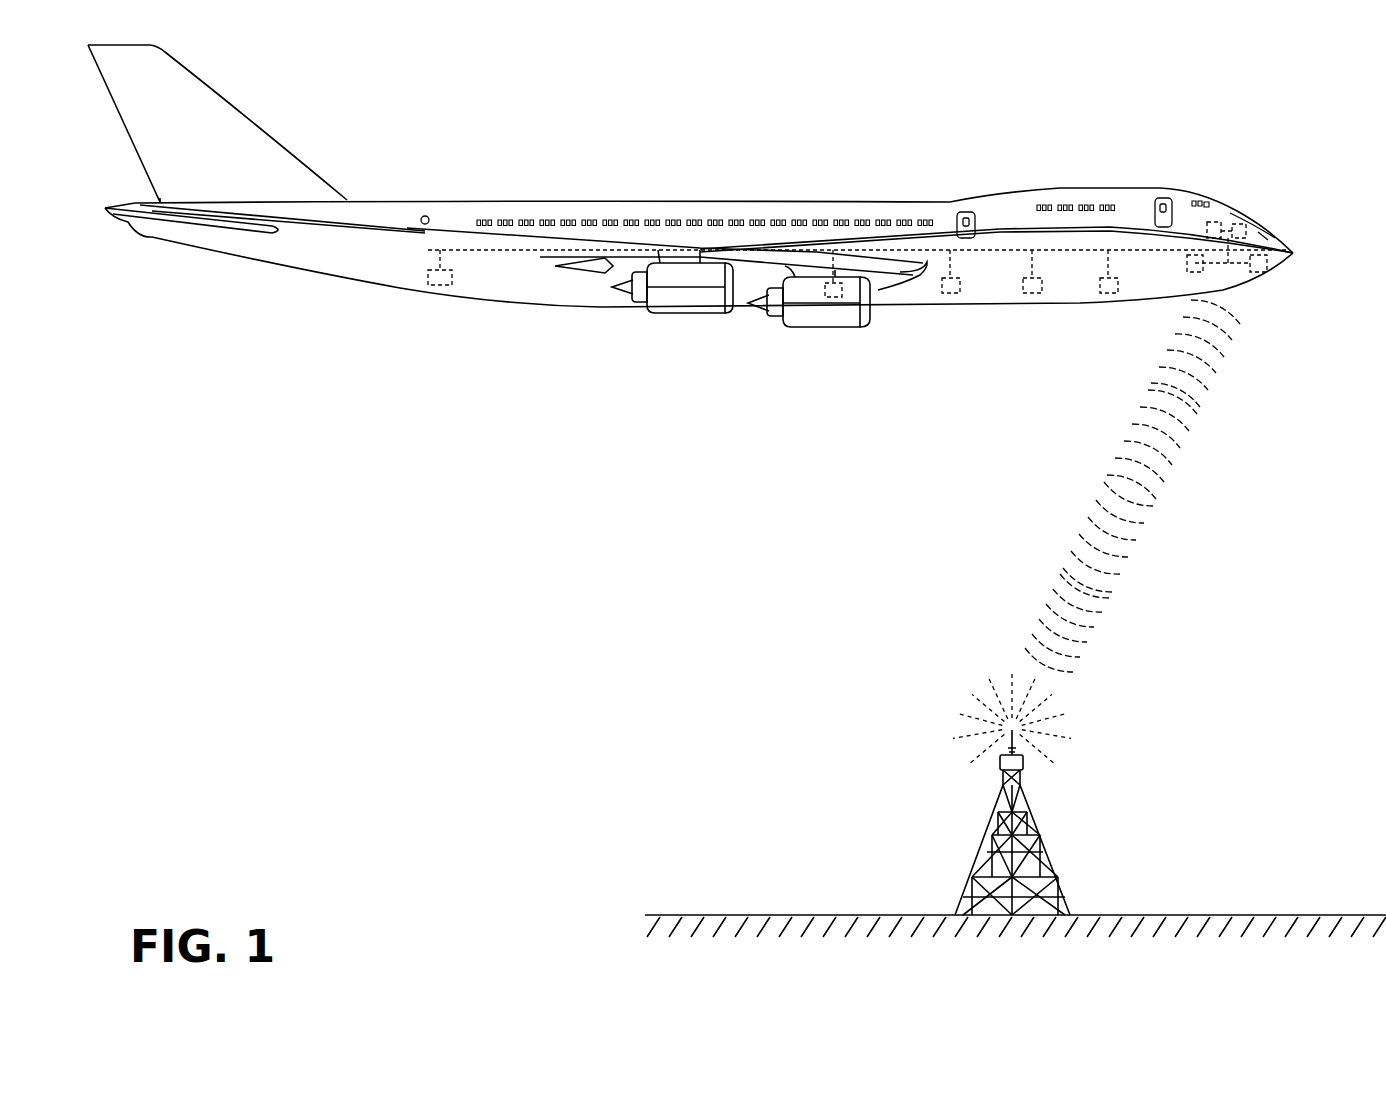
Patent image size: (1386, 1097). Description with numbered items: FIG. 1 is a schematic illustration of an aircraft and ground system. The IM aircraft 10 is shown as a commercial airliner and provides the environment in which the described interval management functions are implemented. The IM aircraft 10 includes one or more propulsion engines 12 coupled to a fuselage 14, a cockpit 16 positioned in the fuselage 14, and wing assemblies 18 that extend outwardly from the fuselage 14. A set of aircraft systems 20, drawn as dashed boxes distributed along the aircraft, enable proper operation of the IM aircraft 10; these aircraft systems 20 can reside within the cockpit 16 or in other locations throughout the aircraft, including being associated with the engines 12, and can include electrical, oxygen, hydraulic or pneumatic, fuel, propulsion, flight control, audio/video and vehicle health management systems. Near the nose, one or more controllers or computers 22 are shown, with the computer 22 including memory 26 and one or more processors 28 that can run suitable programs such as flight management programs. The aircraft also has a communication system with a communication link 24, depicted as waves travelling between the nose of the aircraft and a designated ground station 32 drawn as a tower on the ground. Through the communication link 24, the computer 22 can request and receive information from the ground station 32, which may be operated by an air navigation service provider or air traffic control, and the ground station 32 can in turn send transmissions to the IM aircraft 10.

The IM aircraft 10 is at (1153, 182).
The propulsion engines 12 is at (698, 302).
The fuselage 14 is at (997, 196).
The cockpit 16 is at (1242, 215).
The wing assemblies 18 is at (589, 254).
The set of aircraft systems 20 is at (440, 287).
The computer 22 is at (1265, 236).
The communication link 24 is at (1228, 291).
The memory 26 is at (1215, 222).
The processors 28 is at (1253, 228).
The ground station 32 is at (1048, 818).